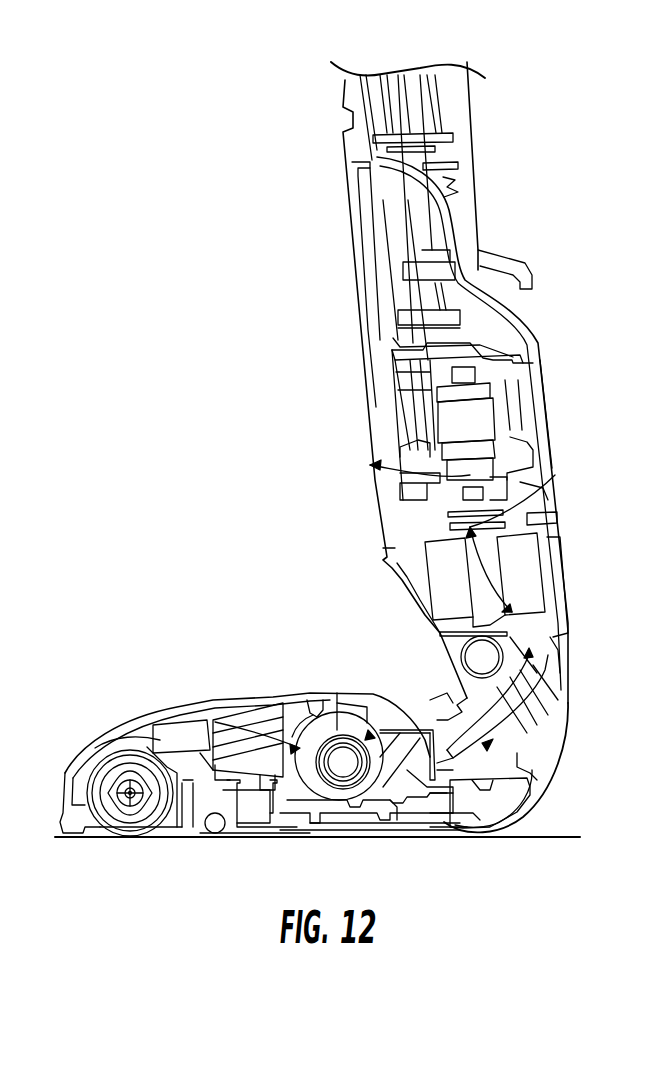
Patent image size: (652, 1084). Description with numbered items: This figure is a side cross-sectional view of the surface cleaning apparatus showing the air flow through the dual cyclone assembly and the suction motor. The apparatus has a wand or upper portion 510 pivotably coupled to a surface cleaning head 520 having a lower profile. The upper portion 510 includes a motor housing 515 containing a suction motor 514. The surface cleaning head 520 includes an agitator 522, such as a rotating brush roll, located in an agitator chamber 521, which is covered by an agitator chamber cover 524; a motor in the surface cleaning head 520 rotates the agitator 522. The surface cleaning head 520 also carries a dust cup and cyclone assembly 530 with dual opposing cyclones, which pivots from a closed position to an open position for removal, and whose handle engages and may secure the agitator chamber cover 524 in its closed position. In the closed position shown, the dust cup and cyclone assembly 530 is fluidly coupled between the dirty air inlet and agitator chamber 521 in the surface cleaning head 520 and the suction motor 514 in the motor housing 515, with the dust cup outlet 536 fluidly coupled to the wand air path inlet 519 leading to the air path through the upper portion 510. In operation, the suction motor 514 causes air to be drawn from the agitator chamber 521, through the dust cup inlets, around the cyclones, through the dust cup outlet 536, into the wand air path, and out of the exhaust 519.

The upper portion 510 is at (315, 230).
The suction motor 514 is at (543, 490).
The motor housing 515 is at (548, 468).
The wand air path inlet 519 is at (493, 747).
The surface cleaning head 520 is at (140, 632).
The agitator chamber 521 is at (147, 750).
The agitator 522 is at (128, 837).
The agitator chamber cover 524 is at (93, 748).
The dust cup and cyclone assembly 530 is at (278, 686).
The dust cup outlet 536 is at (420, 727).